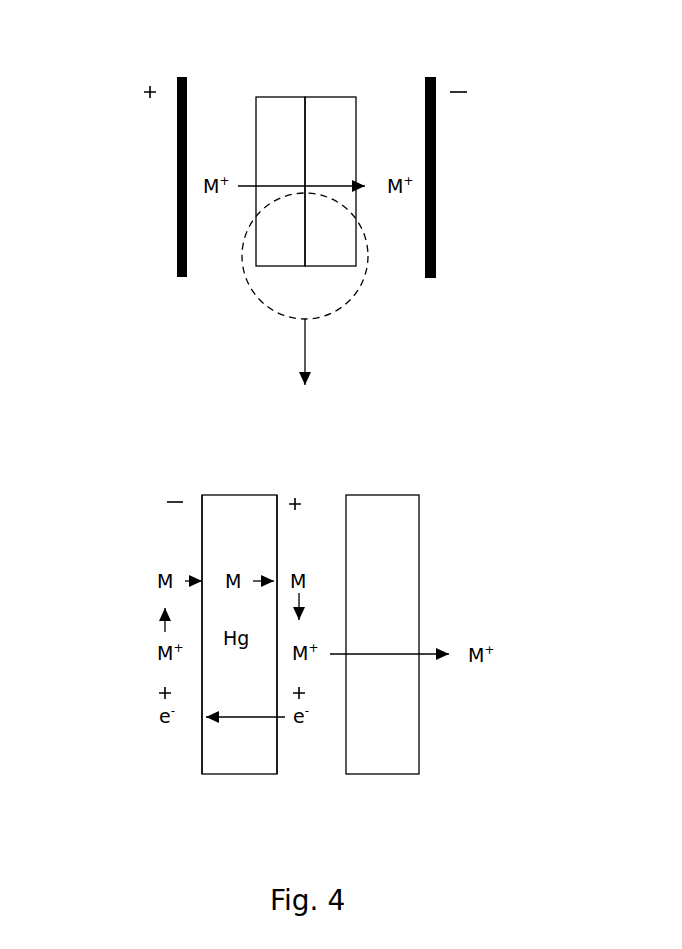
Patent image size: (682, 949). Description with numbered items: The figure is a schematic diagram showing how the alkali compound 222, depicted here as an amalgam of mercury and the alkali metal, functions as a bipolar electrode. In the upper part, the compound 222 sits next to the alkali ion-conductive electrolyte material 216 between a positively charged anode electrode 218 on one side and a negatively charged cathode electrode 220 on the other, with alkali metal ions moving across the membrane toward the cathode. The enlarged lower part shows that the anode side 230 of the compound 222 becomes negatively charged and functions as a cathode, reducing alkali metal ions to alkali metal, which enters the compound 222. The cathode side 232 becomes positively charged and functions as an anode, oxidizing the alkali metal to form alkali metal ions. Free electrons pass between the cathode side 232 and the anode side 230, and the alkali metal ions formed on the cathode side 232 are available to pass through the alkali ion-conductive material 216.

The alkali ion-conductive electrolyte material 216 is at (328, 97).
The anode electrode 218 is at (177, 157).
The cathode electrode 220 is at (436, 148).
The alkali compound 222 is at (280, 97).
The anode side 230 is at (202, 748).
The cathode side 232 is at (277, 748).